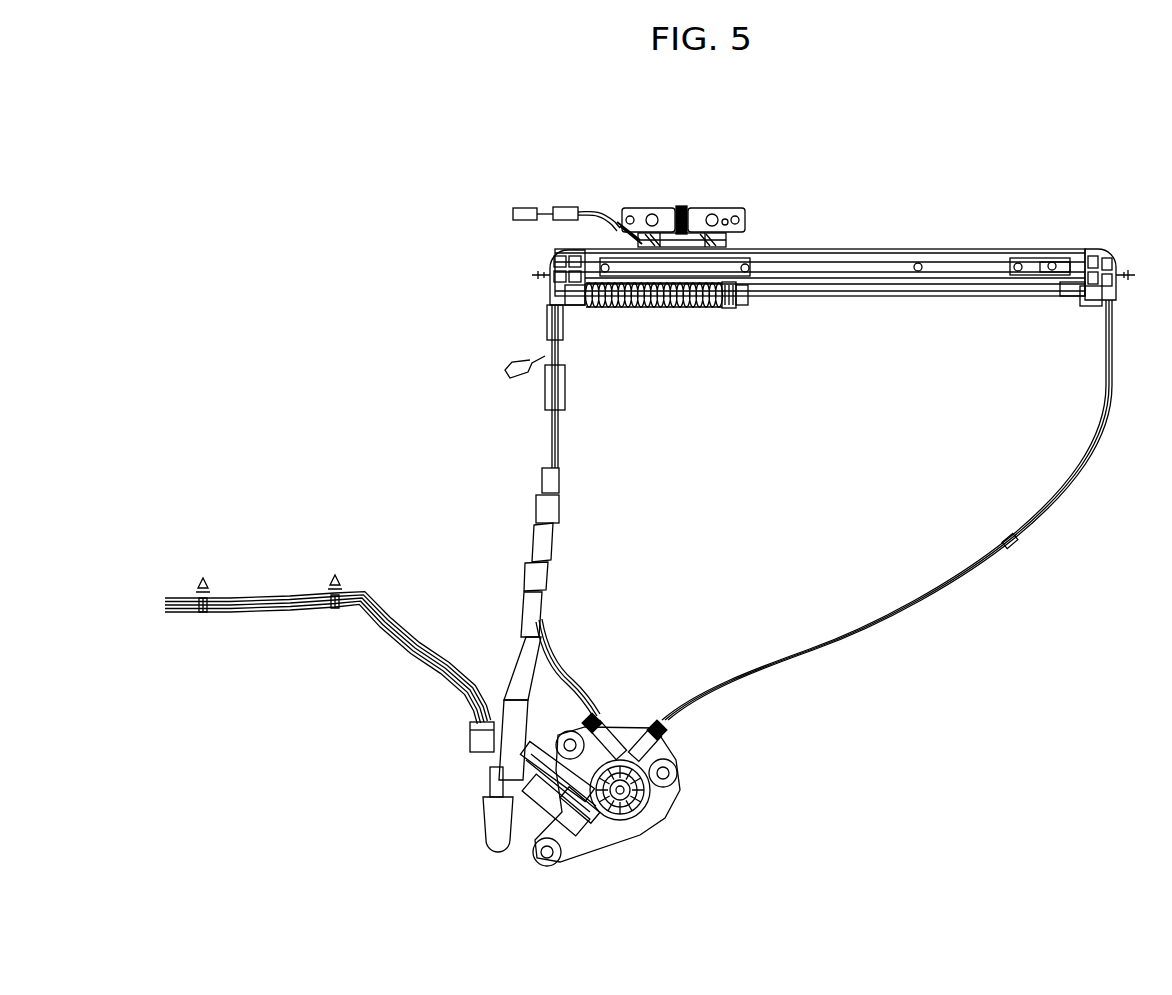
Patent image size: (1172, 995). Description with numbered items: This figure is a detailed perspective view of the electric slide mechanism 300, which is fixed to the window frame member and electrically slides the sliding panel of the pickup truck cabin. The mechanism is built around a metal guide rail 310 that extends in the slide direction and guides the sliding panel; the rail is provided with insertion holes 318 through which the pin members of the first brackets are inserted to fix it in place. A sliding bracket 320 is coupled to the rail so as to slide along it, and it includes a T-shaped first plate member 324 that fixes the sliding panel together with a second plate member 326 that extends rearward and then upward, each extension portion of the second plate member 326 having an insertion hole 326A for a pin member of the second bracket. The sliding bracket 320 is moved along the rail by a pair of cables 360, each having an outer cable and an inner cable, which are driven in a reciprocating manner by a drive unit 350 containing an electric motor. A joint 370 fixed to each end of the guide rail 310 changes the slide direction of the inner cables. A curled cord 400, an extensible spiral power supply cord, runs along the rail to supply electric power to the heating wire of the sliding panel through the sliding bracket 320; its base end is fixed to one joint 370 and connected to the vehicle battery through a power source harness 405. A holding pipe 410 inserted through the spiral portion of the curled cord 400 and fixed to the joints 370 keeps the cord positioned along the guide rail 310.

The electric slide mechanism 300 is at (498, 330).
The guide rail 310 is at (934, 248).
The insertion hole 318 is at (630, 268).
The sliding bracket 320 is at (676, 208).
The first plate member 324 is at (747, 214).
The second plate member 326 is at (725, 228).
The insertion hole 326A is at (650, 209).
The drive unit 350 is at (685, 785).
The cable 360 is at (833, 640).
The joint 370 is at (548, 260).
The curled cord 400 is at (700, 306).
The power source harness 405 is at (400, 643).
The holding pipe 410 is at (865, 292).